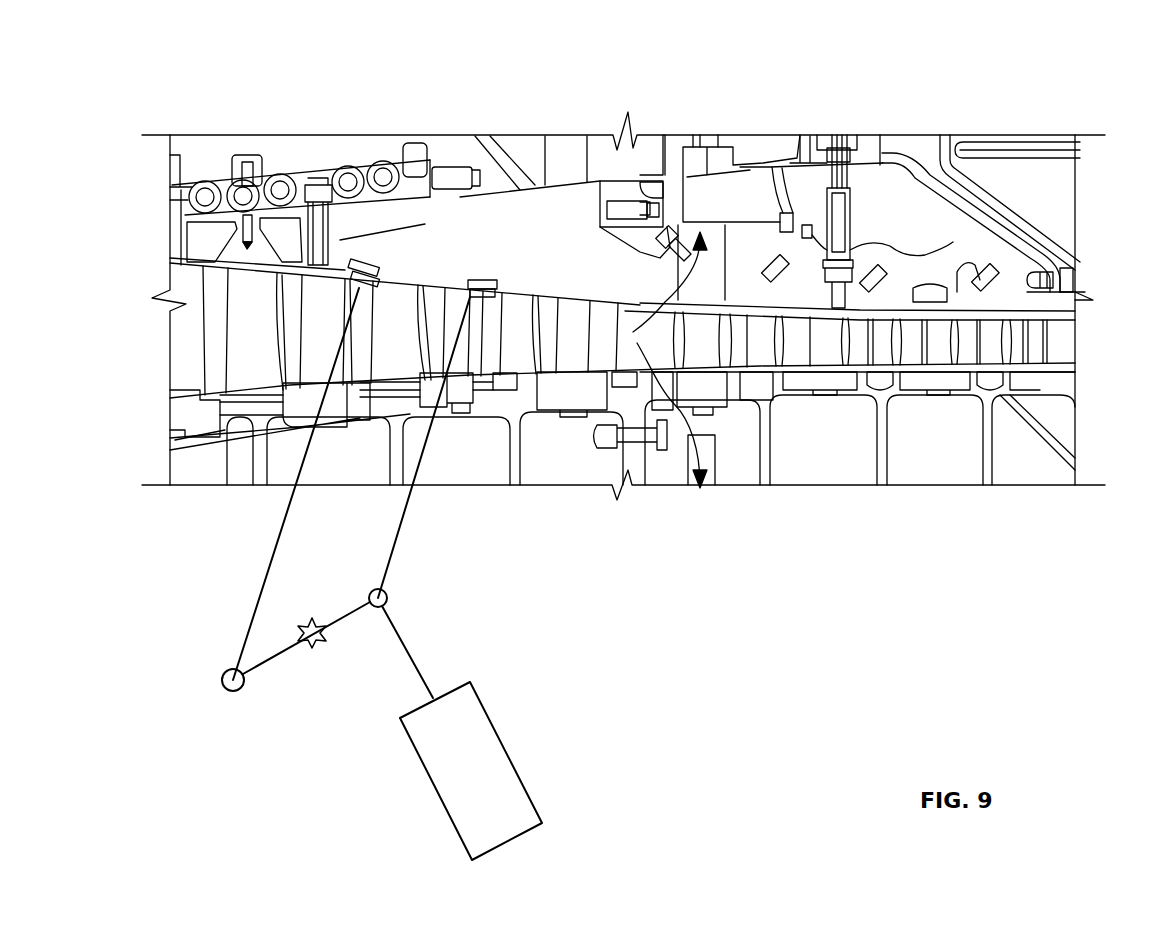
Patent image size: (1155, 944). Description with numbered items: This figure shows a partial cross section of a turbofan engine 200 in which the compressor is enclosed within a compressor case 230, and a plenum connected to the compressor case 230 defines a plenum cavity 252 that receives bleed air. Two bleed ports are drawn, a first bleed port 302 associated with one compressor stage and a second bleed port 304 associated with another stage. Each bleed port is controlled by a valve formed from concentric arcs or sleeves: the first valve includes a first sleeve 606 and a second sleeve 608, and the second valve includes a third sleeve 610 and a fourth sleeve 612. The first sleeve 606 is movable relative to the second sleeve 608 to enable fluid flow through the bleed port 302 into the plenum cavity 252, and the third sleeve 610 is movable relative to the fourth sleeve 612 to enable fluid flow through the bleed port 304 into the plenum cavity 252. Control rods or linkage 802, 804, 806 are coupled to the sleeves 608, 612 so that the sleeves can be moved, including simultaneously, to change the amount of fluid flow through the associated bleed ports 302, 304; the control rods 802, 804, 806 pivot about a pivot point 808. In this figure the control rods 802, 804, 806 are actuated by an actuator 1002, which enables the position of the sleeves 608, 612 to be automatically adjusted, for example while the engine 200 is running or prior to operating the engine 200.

The turbofan engine 200 is at (134, 70).
The compressor case 230 is at (195, 470).
The plenum cavity 252 is at (337, 240).
The first bleed port 302 is at (355, 355).
The second bleed port 304 is at (482, 350).
The first sleeve 606 is at (385, 287).
The second sleeve 608 is at (370, 262).
The third sleeve 610 is at (500, 296).
The fourth sleeve 612 is at (483, 278).
The control rod 802 is at (400, 535).
The control rod 804 is at (257, 672).
The control rod 806 is at (277, 547).
The pivot point 808 is at (316, 641).
The actuator 1002 is at (493, 726).